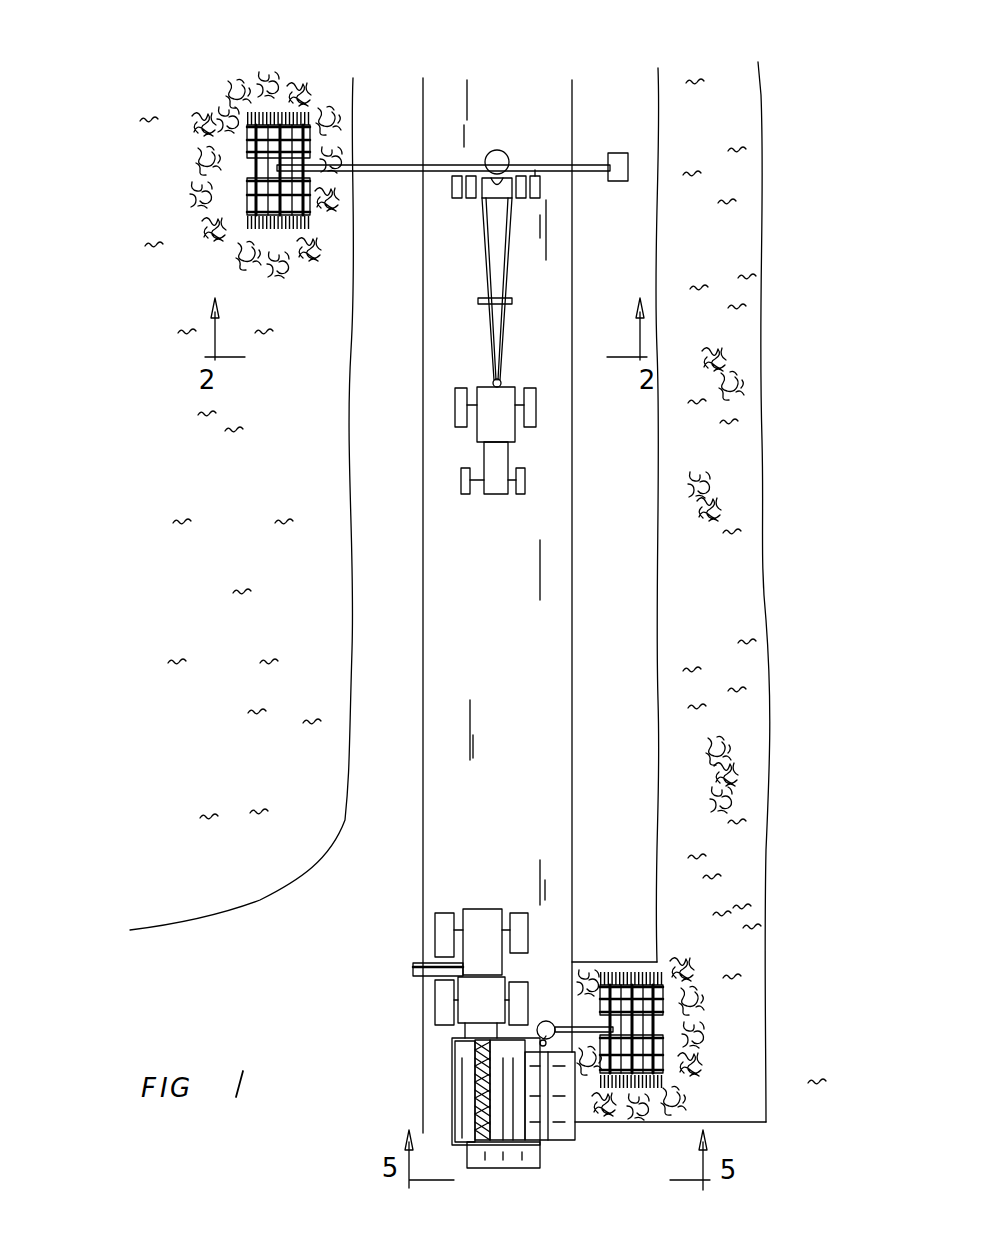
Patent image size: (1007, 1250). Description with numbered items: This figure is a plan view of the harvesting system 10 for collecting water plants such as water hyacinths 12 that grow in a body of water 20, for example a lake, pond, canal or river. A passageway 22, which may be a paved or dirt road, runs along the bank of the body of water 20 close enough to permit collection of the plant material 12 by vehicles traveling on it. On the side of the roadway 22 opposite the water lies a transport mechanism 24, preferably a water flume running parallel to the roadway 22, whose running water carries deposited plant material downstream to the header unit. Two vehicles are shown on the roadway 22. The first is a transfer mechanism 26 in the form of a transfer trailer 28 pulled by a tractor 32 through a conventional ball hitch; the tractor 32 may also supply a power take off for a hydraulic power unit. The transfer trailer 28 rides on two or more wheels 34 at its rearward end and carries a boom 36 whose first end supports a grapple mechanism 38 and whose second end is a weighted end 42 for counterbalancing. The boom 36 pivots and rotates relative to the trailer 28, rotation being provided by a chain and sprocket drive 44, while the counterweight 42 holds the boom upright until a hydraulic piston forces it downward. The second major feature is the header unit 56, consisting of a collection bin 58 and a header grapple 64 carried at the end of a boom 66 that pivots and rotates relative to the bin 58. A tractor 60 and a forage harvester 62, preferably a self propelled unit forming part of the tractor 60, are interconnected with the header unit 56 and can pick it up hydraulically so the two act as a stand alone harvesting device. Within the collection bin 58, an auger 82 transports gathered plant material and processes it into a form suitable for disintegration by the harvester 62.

The harvesting system 10 is at (694, 104).
The water hyacinths 12 is at (246, 88).
The body of water 20 is at (262, 468).
The passageway 22 is at (453, 573).
The transport mechanism 24 is at (728, 256).
The transfer mechanism 26 is at (490, 94).
The transfer trailer 28 is at (512, 170).
The tractor 32 is at (507, 427).
The wheels 34 is at (535, 178).
The boom 36 is at (390, 164).
The grapple mechanism 38 is at (280, 102).
The weighted end 42 is at (620, 153).
The chain and sprocket drive 44 is at (500, 150).
The header unit 56 is at (565, 1142).
The collection bin 58 is at (450, 1050).
The tractor 60 is at (473, 930).
The forage harvester 62 is at (483, 1030).
The header grapple 64 is at (660, 995).
The boom 66 is at (585, 985).
The auger 82 is at (477, 1090).